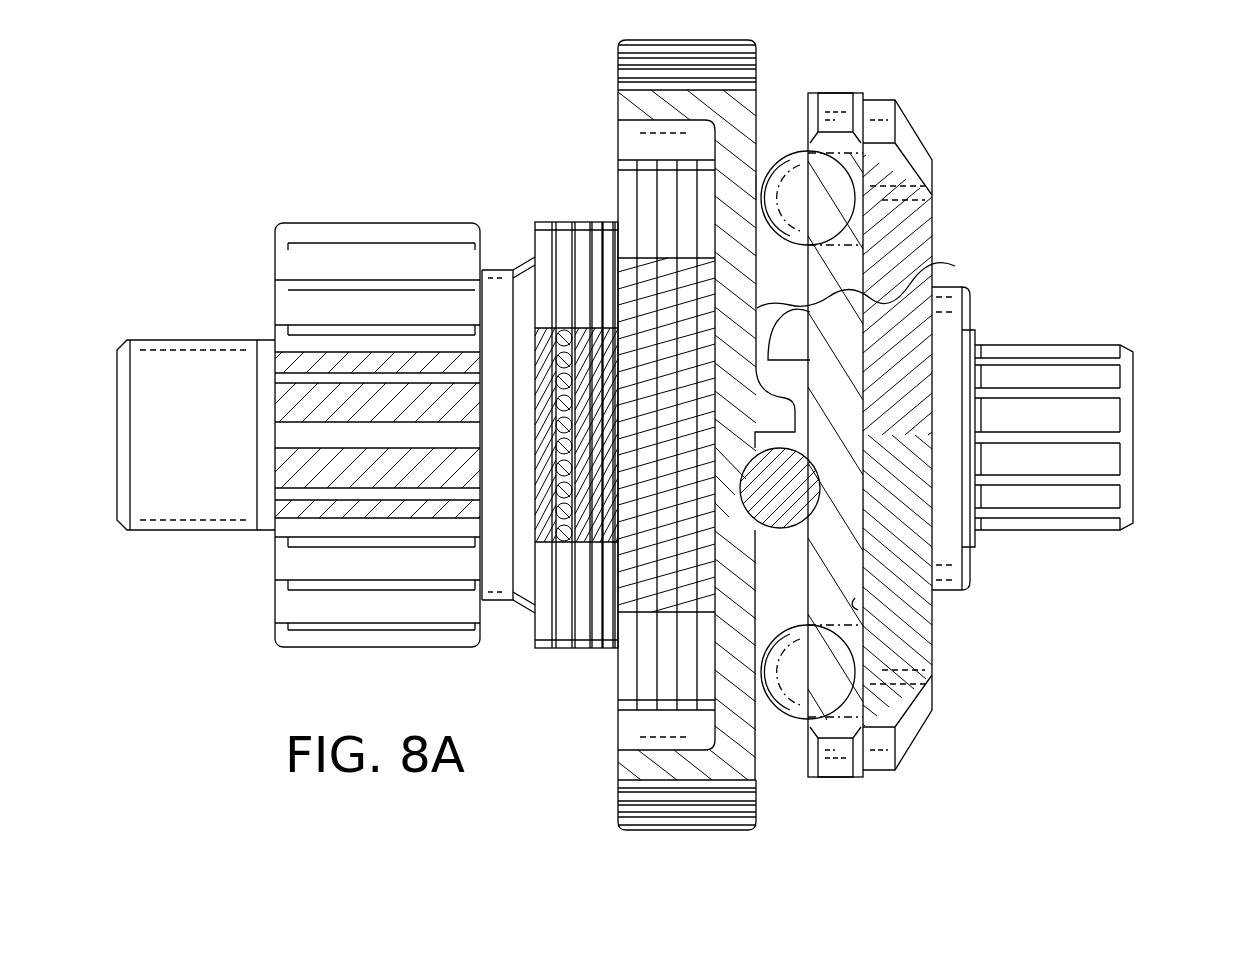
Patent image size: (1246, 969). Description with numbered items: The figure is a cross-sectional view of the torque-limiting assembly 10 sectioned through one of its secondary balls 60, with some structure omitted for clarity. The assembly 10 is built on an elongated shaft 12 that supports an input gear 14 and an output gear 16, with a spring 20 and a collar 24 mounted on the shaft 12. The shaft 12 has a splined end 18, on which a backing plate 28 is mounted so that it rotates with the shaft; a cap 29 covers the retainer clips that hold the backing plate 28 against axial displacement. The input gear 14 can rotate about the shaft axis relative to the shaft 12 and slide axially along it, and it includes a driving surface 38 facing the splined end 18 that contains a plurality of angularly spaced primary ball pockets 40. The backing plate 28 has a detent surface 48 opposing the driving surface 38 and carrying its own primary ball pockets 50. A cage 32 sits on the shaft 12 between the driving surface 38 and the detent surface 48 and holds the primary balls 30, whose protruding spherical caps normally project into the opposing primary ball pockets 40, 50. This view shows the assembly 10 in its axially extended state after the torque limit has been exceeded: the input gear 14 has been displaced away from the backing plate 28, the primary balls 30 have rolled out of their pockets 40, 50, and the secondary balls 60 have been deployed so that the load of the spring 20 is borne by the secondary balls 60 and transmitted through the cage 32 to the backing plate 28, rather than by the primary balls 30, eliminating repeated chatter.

The torque-limiting assembly 10 is at (1128, 130).
The elongated shaft 12 is at (196, 532).
The input gear 14 is at (618, 65).
The output gear 16 is at (372, 648).
The splined end 18 is at (1063, 345).
The spring 20 is at (769, 435).
The collar 24 is at (520, 650).
The backing plate 28 is at (954, 435).
The cap 29 is at (972, 568).
The primary balls 30 is at (793, 218).
The cage 32 is at (883, 463).
The driving surface 38 is at (874, 279).
The primary ball pockets 40 is at (757, 182).
The detent surface 48 is at (860, 606).
The primary ball pockets 50 is at (935, 192).
The secondary balls 60 is at (787, 500).